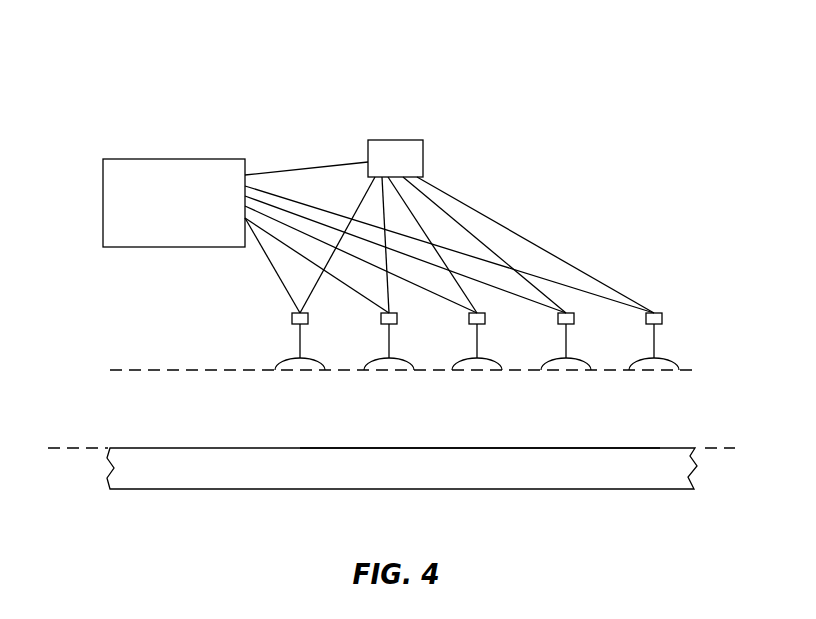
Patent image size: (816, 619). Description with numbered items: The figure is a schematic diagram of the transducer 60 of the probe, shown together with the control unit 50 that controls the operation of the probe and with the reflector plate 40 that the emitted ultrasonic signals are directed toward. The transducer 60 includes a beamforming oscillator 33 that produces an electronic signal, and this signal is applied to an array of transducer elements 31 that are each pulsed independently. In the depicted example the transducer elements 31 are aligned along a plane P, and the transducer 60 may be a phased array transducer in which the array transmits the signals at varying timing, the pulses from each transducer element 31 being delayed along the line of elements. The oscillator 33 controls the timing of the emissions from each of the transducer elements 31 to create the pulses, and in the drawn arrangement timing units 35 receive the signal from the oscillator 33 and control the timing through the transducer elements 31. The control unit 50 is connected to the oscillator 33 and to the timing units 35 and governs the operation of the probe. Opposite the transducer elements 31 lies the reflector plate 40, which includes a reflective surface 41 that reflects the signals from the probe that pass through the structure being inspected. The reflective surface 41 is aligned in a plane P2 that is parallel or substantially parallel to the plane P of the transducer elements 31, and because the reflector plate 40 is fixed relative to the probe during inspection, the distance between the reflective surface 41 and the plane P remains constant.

The transducer 60 is at (487, 120).
The control unit 50 is at (163, 234).
The beamforming oscillator 33 is at (383, 168).
The timing unit 35 is at (308, 319).
The transducer element 31 is at (276, 366).
The plane P is at (128, 370).
The plane P2 is at (128, 445).
The reflector plate 40 is at (540, 472).
The reflective surface 41 is at (655, 448).